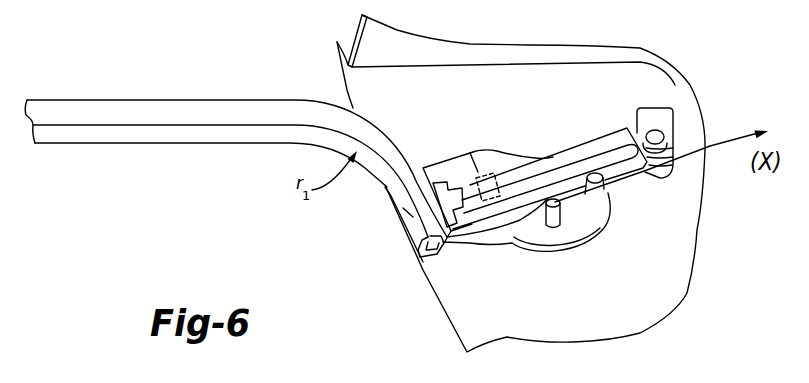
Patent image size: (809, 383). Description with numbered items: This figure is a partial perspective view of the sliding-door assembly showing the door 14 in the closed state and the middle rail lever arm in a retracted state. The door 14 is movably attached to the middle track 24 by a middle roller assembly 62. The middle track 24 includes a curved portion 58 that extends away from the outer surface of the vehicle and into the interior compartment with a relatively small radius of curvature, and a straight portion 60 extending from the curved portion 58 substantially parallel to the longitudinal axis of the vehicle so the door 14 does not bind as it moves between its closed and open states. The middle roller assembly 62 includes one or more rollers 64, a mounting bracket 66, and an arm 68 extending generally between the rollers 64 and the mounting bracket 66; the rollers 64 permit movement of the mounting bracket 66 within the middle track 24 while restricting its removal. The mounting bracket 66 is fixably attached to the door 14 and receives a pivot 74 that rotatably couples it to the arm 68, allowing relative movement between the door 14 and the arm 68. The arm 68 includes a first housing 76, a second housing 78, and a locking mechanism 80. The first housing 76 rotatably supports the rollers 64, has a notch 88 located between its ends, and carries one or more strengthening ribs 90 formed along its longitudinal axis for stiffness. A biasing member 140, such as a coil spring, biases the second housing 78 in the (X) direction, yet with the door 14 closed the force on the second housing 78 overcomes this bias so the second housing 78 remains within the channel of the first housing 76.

The door 14 is at (691, 100).
The middle track 24 is at (168, 112).
The straight portion 60 is at (80, 117).
The curved portion 58 is at (390, 181).
The rollers 64 is at (413, 217).
The first housing 76 is at (447, 140).
The biasing member 140 is at (478, 185).
The strengthening ribs 90 is at (500, 178).
The arm 68 is at (524, 140).
The mounting bracket 66 is at (647, 122).
The pivot 74 is at (655, 133).
The notch 88 is at (607, 190).
The second housing 78 is at (600, 200).
The locking mechanism 80 is at (575, 262).
The middle roller assembly 62 is at (494, 262).